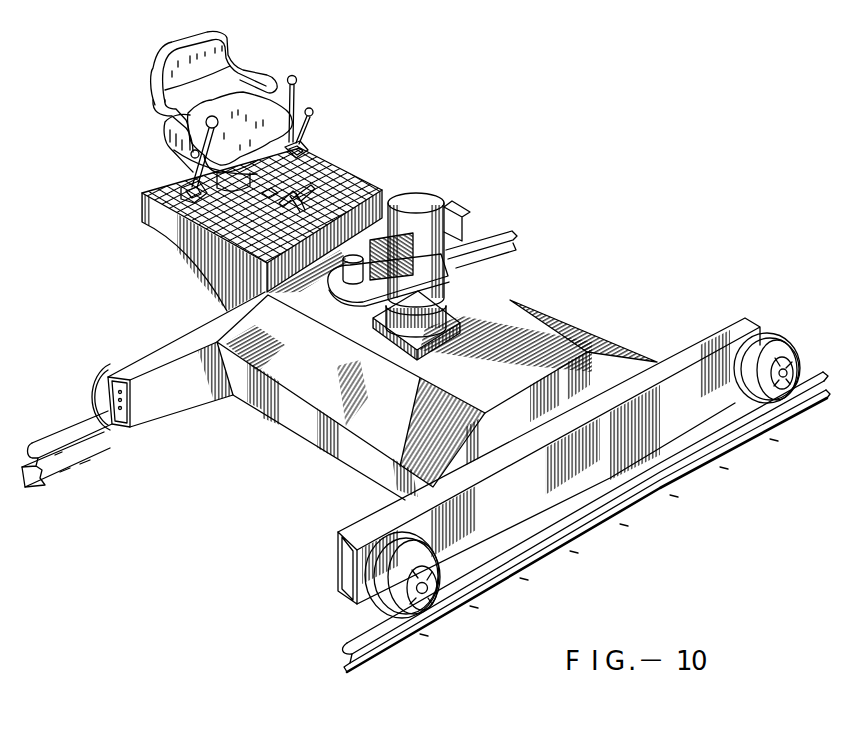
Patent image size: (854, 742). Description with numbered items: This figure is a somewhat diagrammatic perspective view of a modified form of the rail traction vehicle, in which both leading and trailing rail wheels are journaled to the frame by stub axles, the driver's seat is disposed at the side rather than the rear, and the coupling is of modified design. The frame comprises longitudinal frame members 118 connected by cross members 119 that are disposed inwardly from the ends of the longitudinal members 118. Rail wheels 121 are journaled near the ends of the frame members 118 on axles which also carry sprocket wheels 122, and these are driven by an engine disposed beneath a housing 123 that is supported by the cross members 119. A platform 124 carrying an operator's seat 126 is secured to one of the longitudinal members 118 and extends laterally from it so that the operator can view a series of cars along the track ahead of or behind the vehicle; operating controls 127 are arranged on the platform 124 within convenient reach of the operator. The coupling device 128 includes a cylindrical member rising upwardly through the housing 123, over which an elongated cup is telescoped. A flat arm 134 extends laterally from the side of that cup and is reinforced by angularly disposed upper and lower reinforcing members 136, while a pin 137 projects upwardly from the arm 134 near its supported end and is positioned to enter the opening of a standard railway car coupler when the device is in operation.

The longitudinal frame members 118 is at (170, 385).
The cross members 119 is at (328, 442).
The rail wheels 121 is at (387, 590).
The sprocket wheels 122 is at (113, 393).
The housing 123 is at (543, 337).
The platform 124 is at (370, 185).
The operator's seat 126 is at (268, 102).
The operating controls 127 is at (190, 170).
The coupling device 128 is at (430, 198).
The flat arm 134 is at (350, 292).
The reinforcing members 136 is at (395, 300).
The pin 137 is at (328, 283).